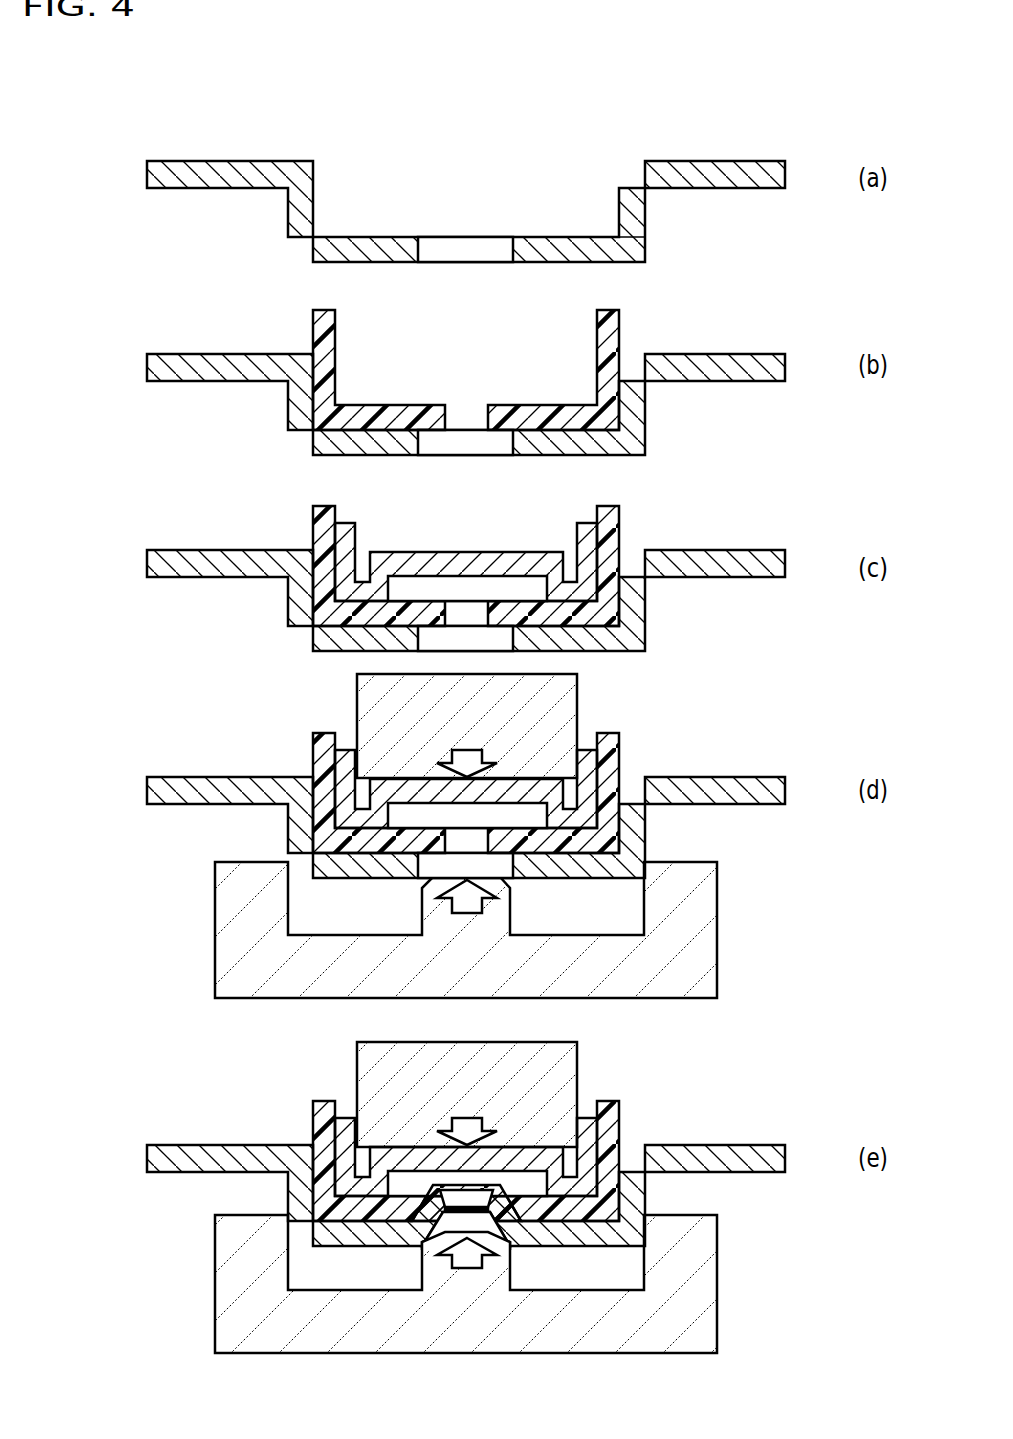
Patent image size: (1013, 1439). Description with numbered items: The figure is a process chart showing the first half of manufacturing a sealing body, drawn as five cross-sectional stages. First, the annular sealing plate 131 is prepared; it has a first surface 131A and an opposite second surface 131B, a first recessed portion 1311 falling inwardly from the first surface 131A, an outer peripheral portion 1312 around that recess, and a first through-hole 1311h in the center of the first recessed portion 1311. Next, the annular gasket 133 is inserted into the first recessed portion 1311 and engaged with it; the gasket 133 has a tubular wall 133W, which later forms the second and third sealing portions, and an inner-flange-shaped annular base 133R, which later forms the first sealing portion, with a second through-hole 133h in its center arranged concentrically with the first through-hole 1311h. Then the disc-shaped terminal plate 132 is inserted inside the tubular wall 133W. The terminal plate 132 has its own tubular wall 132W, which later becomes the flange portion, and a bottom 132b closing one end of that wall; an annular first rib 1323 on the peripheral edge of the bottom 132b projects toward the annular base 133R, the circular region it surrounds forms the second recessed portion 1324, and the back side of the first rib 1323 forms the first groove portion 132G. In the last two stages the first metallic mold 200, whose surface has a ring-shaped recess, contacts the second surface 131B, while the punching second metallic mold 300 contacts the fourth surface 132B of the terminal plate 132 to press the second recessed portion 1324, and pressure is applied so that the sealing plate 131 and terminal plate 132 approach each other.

The sealing plate 131 is at (491, 149).
The first surface 131A is at (665, 159).
The second surface 131B is at (720, 190).
The first recessed portion 1311 is at (558, 242).
The first through-hole 1311h is at (438, 264).
The outer peripheral portion 1312 is at (195, 176).
The gasket 133 is at (622, 322).
The tubular wall 133W is at (322, 333).
The annular base 133R is at (358, 406).
The second through-hole 133h is at (471, 402).
The terminal plate 132 is at (356, 521).
The fourth surface 132B is at (448, 550).
The second recessed portion 1324 is at (468, 529).
The first rib 1323 is at (600, 598).
The first groove portion 132G is at (362, 576).
The tubular wall 132W is at (578, 548).
The bottom 132b is at (518, 774).
The second metallic mold 300 is at (370, 705).
The first metallic mold 200 is at (693, 935).